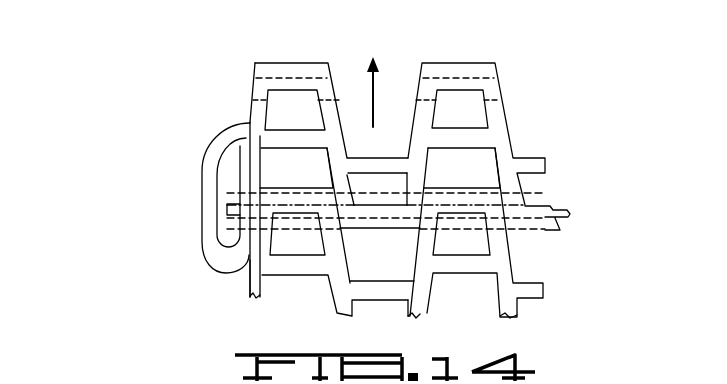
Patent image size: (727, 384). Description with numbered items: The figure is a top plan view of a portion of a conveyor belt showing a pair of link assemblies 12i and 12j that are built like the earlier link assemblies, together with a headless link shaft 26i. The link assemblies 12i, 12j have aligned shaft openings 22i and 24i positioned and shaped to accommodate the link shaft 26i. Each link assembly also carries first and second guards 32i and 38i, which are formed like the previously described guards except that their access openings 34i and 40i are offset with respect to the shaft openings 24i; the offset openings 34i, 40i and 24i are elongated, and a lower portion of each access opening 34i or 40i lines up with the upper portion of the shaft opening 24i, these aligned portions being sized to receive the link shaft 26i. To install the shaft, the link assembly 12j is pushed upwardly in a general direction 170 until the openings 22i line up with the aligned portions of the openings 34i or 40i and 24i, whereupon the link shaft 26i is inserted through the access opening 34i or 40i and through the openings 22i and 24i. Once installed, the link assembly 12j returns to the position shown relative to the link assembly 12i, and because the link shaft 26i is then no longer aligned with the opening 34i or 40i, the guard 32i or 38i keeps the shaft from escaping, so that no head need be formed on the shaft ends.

The general direction 170 is at (378, 82).
The first guard 32i is at (150, 186).
The second guard 38i is at (208, 127).
The link assembly 12i is at (192, 178).
The access opening 34i is at (143, 212).
The access opening 40i is at (225, 206).
The link assembly 12j is at (239, 286).
The link shaft 26i is at (555, 205).
The shaft opening 22i is at (307, 188).
The shaft opening 24i is at (411, 237).